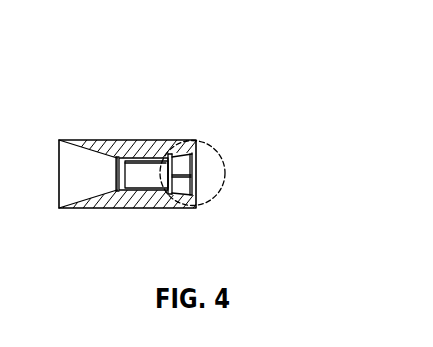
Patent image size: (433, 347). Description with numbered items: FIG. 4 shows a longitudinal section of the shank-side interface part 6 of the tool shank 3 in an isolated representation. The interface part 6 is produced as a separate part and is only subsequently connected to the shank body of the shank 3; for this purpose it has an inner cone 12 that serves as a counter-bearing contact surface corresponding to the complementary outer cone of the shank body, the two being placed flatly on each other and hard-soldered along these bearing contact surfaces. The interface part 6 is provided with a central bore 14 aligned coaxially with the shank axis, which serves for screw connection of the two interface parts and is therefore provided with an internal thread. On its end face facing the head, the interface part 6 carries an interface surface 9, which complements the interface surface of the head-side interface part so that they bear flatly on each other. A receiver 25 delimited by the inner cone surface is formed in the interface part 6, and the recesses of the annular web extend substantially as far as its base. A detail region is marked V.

The inner cone 12 is at (87, 197).
The shank 3 is at (149, 204).
The interface part 6 is at (131, 206).
The bore 14 is at (143, 168).
The interface surface 9 is at (195, 162).
The receiver 25 is at (197, 180).
The detail view marker V is at (203, 141).